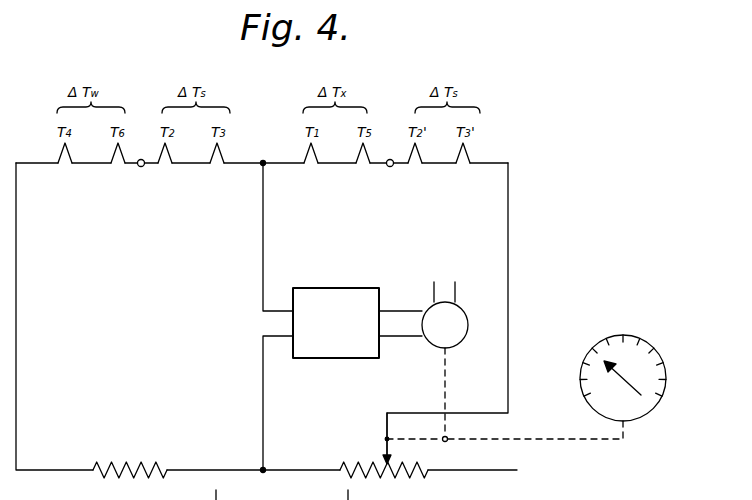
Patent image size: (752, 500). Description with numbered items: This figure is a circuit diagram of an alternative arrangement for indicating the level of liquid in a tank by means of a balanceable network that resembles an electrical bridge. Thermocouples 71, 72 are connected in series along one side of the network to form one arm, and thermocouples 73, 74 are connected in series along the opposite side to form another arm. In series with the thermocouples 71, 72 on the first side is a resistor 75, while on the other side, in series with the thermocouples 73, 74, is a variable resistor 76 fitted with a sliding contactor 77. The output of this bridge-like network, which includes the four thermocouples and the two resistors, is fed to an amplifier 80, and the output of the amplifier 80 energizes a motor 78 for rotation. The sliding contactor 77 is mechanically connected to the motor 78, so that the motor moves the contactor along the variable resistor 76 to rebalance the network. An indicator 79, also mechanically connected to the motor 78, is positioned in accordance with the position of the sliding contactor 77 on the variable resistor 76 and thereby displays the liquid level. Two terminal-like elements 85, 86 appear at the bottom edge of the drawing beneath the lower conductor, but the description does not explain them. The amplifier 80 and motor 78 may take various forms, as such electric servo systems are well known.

The thermocouple 71 is at (90, 165).
The thermocouple 72 is at (190, 165).
The thermocouple 73 is at (337, 165).
The thermocouple 74 is at (436, 165).
The resistor 75 is at (141, 462).
The variable resistor 76 is at (368, 462).
The sliding contactor 77 is at (390, 452).
The motor 78 is at (458, 343).
The indicator 79 is at (624, 335).
The amplifier 80 is at (347, 298).
The terminal 85 is at (365, 498).
The terminal 86 is at (497, 498).